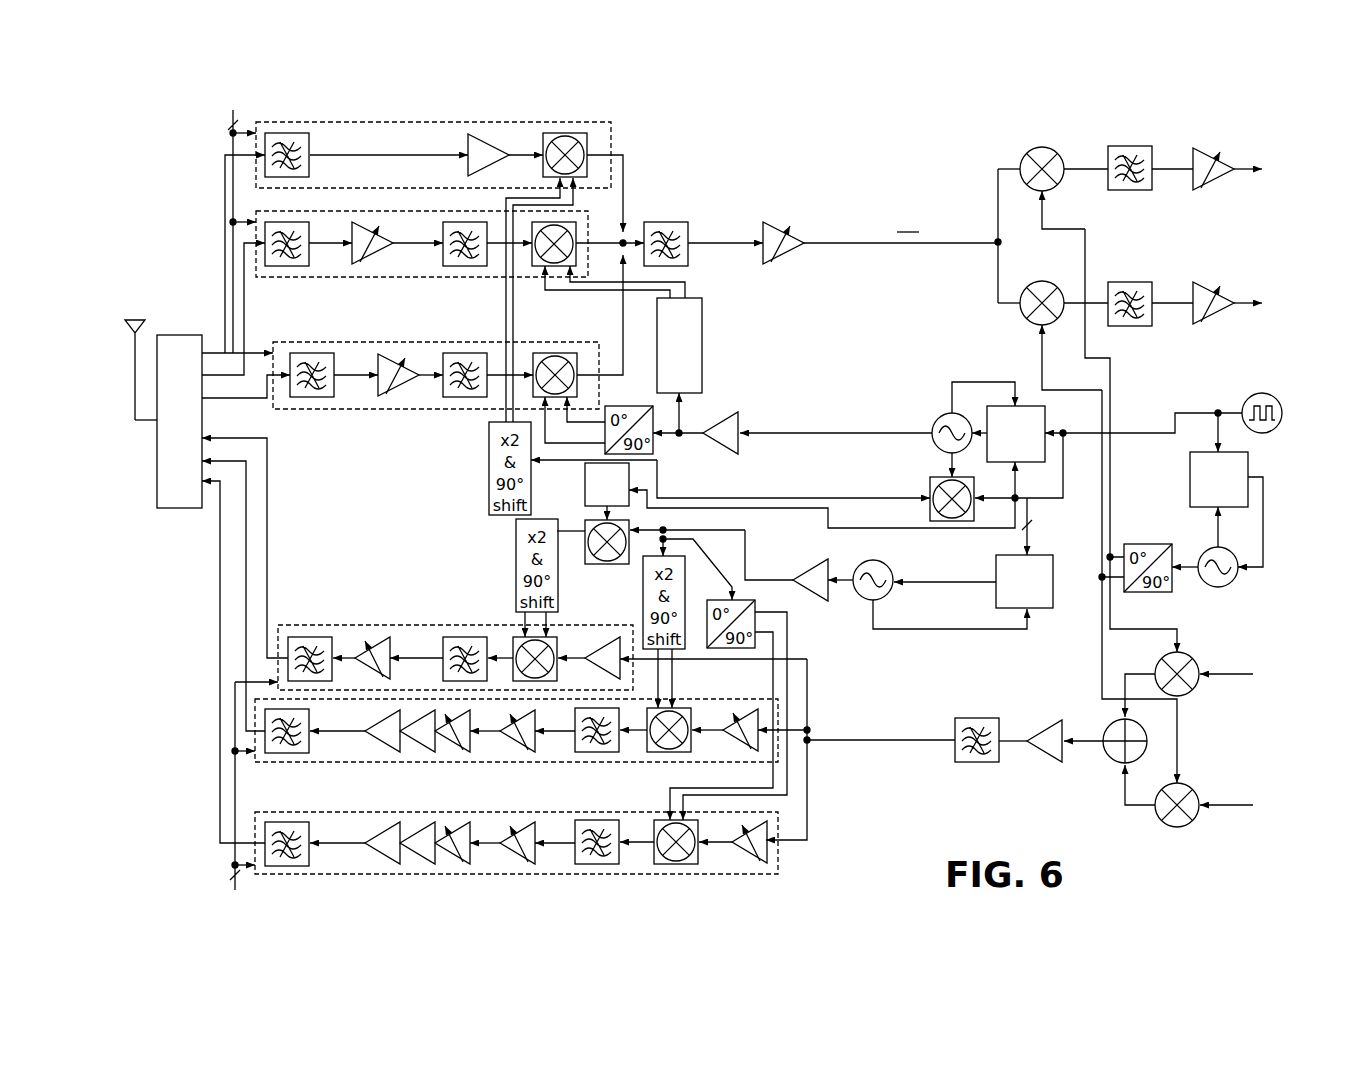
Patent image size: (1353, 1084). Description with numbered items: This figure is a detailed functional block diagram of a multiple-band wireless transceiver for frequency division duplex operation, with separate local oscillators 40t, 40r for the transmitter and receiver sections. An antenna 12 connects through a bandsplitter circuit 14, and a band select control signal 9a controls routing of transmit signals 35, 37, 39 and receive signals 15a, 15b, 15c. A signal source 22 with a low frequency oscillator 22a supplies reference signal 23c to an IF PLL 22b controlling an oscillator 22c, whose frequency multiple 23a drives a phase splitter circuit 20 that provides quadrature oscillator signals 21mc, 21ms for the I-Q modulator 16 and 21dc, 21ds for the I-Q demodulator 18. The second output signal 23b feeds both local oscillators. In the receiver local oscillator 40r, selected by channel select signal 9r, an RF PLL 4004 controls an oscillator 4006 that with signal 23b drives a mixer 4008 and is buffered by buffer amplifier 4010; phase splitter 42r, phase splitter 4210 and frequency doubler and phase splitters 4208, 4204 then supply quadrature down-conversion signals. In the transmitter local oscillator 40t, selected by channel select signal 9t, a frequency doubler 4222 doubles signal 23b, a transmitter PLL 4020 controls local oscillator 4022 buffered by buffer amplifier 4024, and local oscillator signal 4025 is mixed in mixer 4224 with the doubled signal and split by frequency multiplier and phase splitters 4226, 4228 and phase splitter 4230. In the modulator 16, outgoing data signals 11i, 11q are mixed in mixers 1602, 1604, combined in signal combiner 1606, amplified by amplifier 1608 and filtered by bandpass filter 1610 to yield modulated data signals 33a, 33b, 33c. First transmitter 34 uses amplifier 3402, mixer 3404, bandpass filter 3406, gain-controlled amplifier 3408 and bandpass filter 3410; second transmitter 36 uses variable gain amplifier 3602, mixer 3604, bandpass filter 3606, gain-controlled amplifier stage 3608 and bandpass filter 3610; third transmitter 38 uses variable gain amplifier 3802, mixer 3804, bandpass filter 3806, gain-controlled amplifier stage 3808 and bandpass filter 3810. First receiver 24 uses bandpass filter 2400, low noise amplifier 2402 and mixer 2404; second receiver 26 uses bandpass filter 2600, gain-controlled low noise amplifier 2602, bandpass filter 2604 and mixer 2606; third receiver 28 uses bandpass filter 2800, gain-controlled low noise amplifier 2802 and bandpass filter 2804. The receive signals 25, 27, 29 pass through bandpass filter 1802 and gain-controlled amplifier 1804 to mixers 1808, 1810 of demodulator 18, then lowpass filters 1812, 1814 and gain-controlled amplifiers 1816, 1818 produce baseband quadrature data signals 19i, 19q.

The antenna 12 is at (136, 318).
The bandsplitter circuit 14 is at (157, 470).
The band select control signal 9a is at (224, 150).
The incoming receive signal 15a is at (225, 197).
The incoming receive signal 15b is at (244, 265).
The incoming receive signal 15c is at (208, 401).
The first receiver circuit 24 is at (364, 122).
The bandpass filter 2400 is at (290, 133).
The low noise amplifier 2402 is at (488, 136).
The mixer 2404 is at (580, 133).
The incoming receive signal 25 is at (625, 153).
The second receiver circuit 26 is at (391, 277).
The bandpass filter 2600 is at (290, 266).
The gain-controlled low noise amplifier 2602 is at (363, 266).
The bandpass filter 2604 is at (462, 266).
The mixer 2606 is at (556, 268).
The incoming receive signal 27 is at (604, 240).
The third receiver circuit 28 is at (292, 342).
The bandpass filter 2800 is at (311, 398).
The gain-controlled low noise amplifier 2802 is at (373, 398).
The bandpass filter 2804 is at (468, 353).
The incoming receive signal 29 is at (599, 362).
The bandpass filter 1802 is at (690, 222).
The gain-controlled amplifier 1804 is at (780, 223).
The I-Q demodulator 18 is at (918, 261).
The mixer 1808 is at (1037, 147).
The mixer 1810 is at (1037, 281).
The lowpass filter 1812 is at (1130, 146).
The lowpass filter 1814 is at (1130, 282).
The gain-controlled amplifier 1816 is at (1195, 148).
The gain-controlled amplifier 1818 is at (1195, 283).
The baseband quadrature data signal 19i is at (1247, 169).
The baseband quadrature data signal 19q is at (1247, 305).
The quadrature oscillator signal 21dc is at (1085, 243).
The quadrature oscillator signal 21ds is at (1039, 353).
The quadrature oscillator signal 21mc is at (1135, 617).
The quadrature oscillator signal 21ms is at (1102, 648).
The phase splitter circuit 20 is at (1127, 544).
The signal source 22 is at (1291, 529).
The low frequency oscillator 22a is at (1283, 413).
The intermediate frequency phase lock loop 22b is at (1190, 494).
The oscillator 22c is at (1222, 588).
The frequency multiple signal 23a is at (1188, 580).
The output signal 23b is at (1145, 433).
The reference signal 23c is at (1228, 430).
The radio frequency PLL 4004 is at (1046, 428).
The oscillator 4006 is at (933, 445).
The mixer 4008 is at (925, 514).
The buffer amplifier 4010 is at (742, 446).
The phase splitter circuit 42r is at (702, 467).
The receiver local oscillator 40r is at (988, 474).
The channel select signal 9r is at (1013, 496).
The channel select signal 9t is at (1033, 514).
The frequency doubler and phase splitter 4204 is at (489, 438).
The frequency doubler and phase splitter 4208 is at (702, 373).
The phase splitter 4210 is at (644, 406).
The frequency doubler 4222 is at (585, 484).
The mixer 4224 is at (585, 526).
The frequency multiplier and phase splitter 4226 is at (516, 531).
The frequency multiplier and phase splitter 4228 is at (643, 584).
The phase splitter 4230 is at (760, 596).
The buffer amplifier 4024 is at (810, 569).
The local oscillator signal 4025 is at (786, 580).
The local oscillator 4022 is at (890, 595).
The transmitter local oscillator 40t is at (990, 617).
The transmitter PLL 4020 is at (1050, 609).
The first transmitter 34 is at (278, 672).
The transmit signal 35 is at (267, 558).
The transmit signal 37 is at (246, 588).
The transmit signal 39 is at (220, 616).
The amplifier 3402 is at (612, 637).
The mixer 3404 is at (506, 642).
The bandpass filter 3406 is at (451, 637).
The gain-controlled amplifier 3408 is at (373, 637).
The bandpass filter 3410 is at (301, 637).
The modulated data signal 33a is at (809, 665).
The modulated data signal 33b is at (808, 727).
The modulated data signal 33c is at (808, 838).
The second transmitter 36 is at (255, 714).
The variable gain amplifier 3602 is at (748, 708).
The mixer 3604 is at (663, 753).
The bandpass filter 3606 is at (618, 753).
The gain-controlled amplifier stage 3608 is at (536, 763).
The bandpass filter 3610 is at (286, 753).
The third transmitter 38 is at (255, 829).
The variable gain amplifier 3802 is at (762, 866).
The mixer 3804 is at (673, 866).
The bandpass filter 3806 is at (590, 866).
The gain-controlled amplifier stage 3808 is at (536, 875).
The bandpass filter 3810 is at (291, 866).
The I-Q modulator 16 is at (1101, 824).
The mixer 1602 is at (1196, 691).
The mixer 1604 is at (1180, 828).
The signal combiner 1606 is at (1110, 762).
The amplifier 1608 is at (1060, 762).
The bandpass filter 1610 is at (981, 763).
The quadrature outgoing data signal 11i is at (1251, 677).
The quadrature outgoing data signal 11q is at (1240, 808).